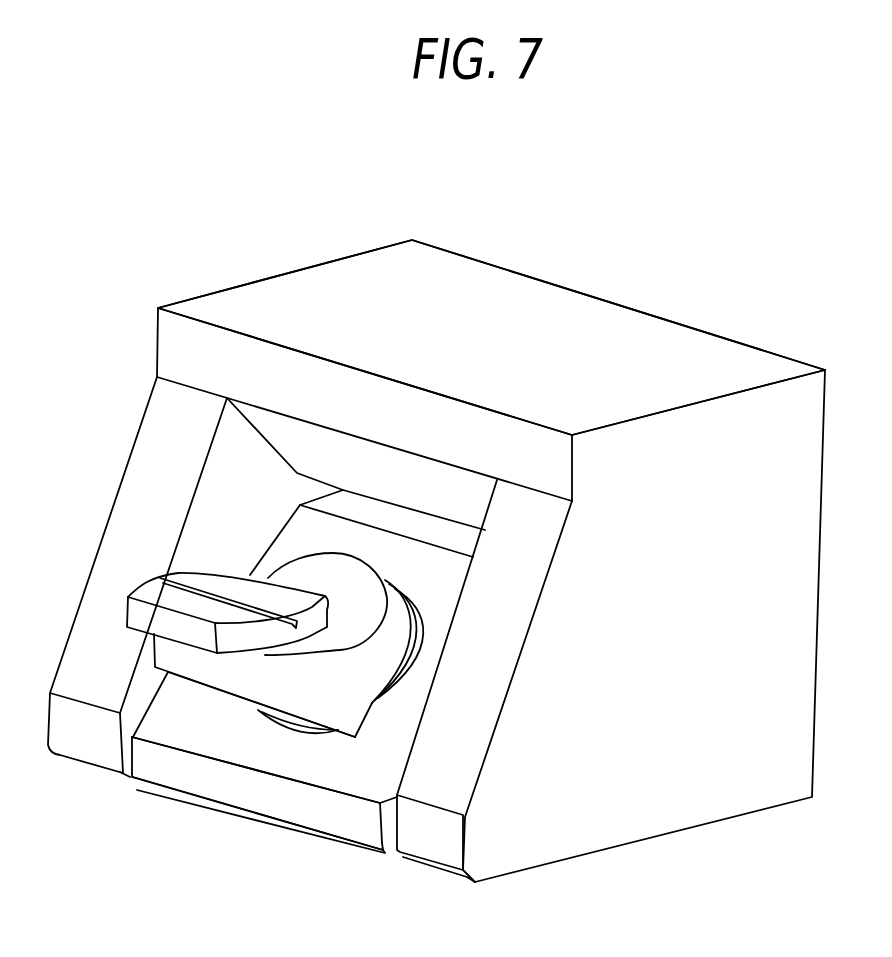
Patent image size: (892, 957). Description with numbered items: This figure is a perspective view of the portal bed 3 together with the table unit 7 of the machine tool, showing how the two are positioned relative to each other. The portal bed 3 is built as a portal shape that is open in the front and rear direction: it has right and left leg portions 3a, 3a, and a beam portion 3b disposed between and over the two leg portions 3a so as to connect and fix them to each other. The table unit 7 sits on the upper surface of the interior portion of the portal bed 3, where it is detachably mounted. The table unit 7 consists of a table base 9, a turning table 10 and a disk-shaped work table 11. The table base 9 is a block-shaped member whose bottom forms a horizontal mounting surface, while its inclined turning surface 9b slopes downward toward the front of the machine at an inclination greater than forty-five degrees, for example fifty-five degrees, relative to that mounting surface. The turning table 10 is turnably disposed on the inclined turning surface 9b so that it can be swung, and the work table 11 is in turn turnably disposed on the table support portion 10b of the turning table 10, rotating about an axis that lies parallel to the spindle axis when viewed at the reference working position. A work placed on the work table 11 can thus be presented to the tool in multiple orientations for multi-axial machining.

The portal bed 3 is at (531, 268).
The leg portion 3a is at (118, 495).
The beam portion 3b is at (598, 313).
The table unit 7 is at (193, 830).
The table base 9 is at (329, 858).
The inclined turning surface 9b is at (307, 762).
The turning table 10 is at (352, 545).
The table support portion 10b is at (206, 664).
The work table 11 is at (203, 573).